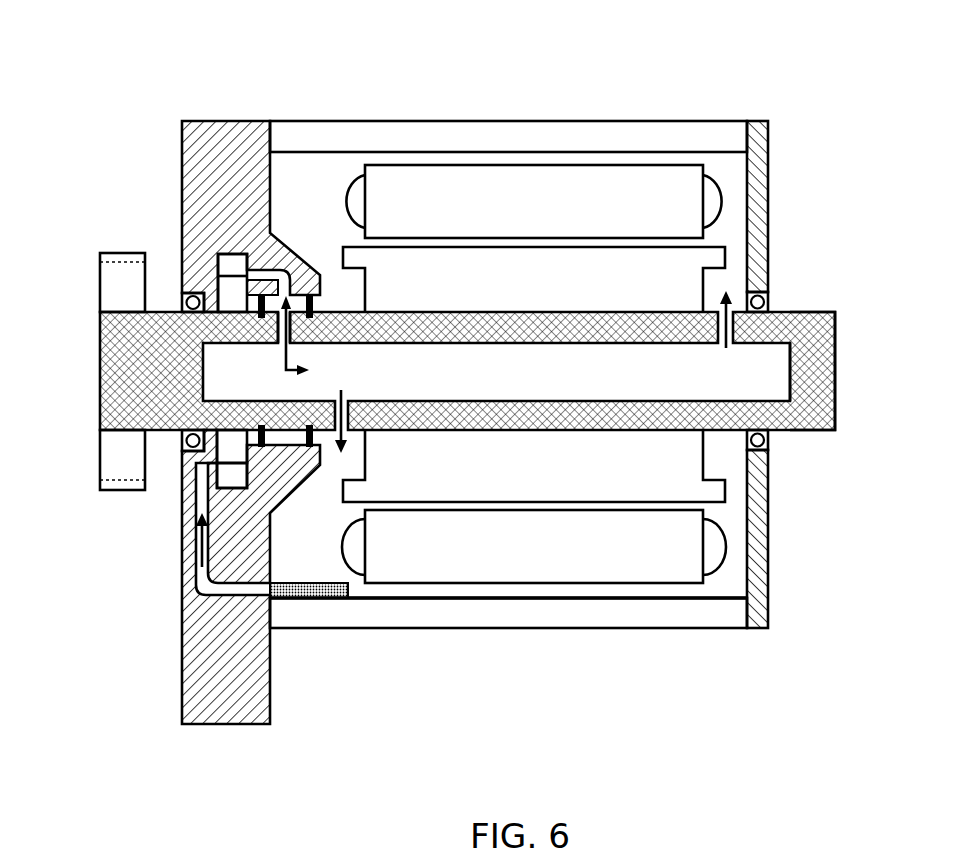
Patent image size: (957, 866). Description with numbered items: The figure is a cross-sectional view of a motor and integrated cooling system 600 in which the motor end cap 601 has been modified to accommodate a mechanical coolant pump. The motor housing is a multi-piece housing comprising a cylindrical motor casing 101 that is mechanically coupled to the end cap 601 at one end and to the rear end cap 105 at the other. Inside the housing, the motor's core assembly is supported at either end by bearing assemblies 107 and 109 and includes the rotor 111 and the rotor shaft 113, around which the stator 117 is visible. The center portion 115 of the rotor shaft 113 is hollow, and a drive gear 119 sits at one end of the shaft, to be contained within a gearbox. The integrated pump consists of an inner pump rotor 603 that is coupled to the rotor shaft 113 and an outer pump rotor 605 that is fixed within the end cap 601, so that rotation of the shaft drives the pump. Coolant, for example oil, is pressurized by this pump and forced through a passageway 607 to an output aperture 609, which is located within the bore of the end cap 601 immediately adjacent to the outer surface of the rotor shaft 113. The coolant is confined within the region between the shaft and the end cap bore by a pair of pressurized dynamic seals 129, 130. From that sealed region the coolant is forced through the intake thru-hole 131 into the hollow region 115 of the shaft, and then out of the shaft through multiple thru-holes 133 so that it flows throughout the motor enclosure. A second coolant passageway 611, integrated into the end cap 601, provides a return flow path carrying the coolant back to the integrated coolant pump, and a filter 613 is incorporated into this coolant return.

The motor and integrated cooling system with integrated coolant pump 600 is at (198, 76).
The motor end cap 601 is at (210, 137).
The cylindrical motor casing 101 is at (529, 148).
The rear end cap 105 is at (755, 165).
The bearing assembly 107 is at (183, 297).
The bearing assembly 109 is at (768, 303).
The rotor 111 is at (529, 288).
The rotor shaft 113 is at (803, 413).
The hollow center portion of rotor shaft 115 is at (529, 381).
The stator 117 is at (529, 208).
The drive gear 119 is at (112, 285).
The seal 129 is at (263, 297).
The seal 130 is at (316, 292).
The intake thru-hole 131 is at (298, 327).
The thru-holes 133 is at (356, 413).
The inner pump rotor 603 is at (233, 460).
The outer pump rotor 605 is at (232, 480).
The coolant passageway 607 is at (282, 273).
The output aperture 609 is at (275, 320).
The second coolant passageway 611 is at (207, 584).
The filter 613 is at (310, 597).